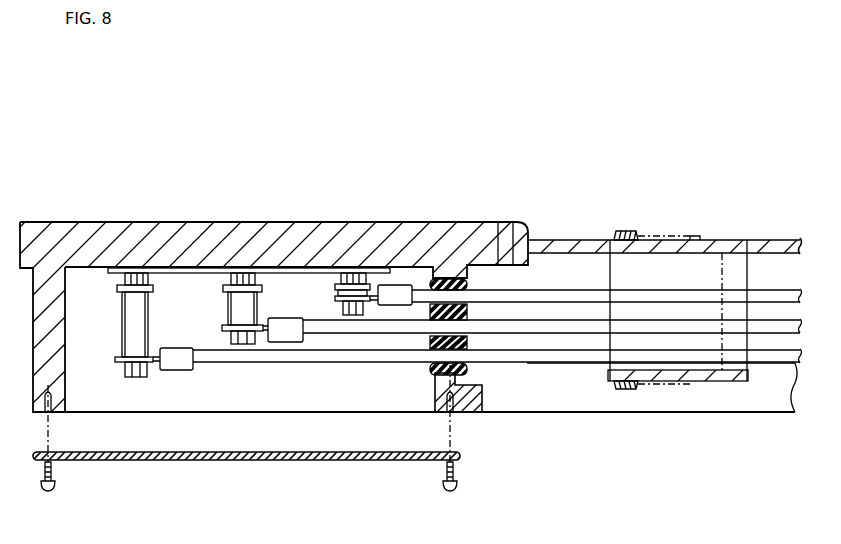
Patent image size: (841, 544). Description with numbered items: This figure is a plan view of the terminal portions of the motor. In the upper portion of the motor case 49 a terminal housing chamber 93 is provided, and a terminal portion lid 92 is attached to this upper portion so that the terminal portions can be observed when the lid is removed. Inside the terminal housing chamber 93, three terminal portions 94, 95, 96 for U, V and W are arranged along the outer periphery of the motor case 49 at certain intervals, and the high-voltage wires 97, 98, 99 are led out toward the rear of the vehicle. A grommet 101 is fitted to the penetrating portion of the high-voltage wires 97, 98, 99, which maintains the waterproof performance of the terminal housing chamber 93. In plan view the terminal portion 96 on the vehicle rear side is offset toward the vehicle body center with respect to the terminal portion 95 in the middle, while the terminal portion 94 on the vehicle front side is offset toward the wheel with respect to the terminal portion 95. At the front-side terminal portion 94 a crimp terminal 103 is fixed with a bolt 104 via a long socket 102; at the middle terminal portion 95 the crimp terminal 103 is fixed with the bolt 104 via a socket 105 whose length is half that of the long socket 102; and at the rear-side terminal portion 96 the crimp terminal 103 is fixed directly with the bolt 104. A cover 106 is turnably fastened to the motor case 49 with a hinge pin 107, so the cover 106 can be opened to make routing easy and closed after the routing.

The motor case 49 is at (435, 232).
The terminal portion lid 92 is at (250, 462).
The terminal housing chamber 93 is at (67, 313).
The terminal portion 94 is at (113, 278).
The terminal portion 95 is at (214, 278).
The terminal portion 96 is at (335, 298).
The high-voltage wire 97 is at (526, 360).
The high-voltage wire 98 is at (562, 330).
The high-voltage wire 99 is at (580, 297).
The grommet 101 is at (467, 365).
The long socket 102 is at (133, 326).
The crimp terminal 103 is at (115, 358).
The bolt 104 is at (134, 378).
The socket 105 is at (233, 303).
The cover 106 is at (683, 237).
The hinge pin 107 is at (626, 231).